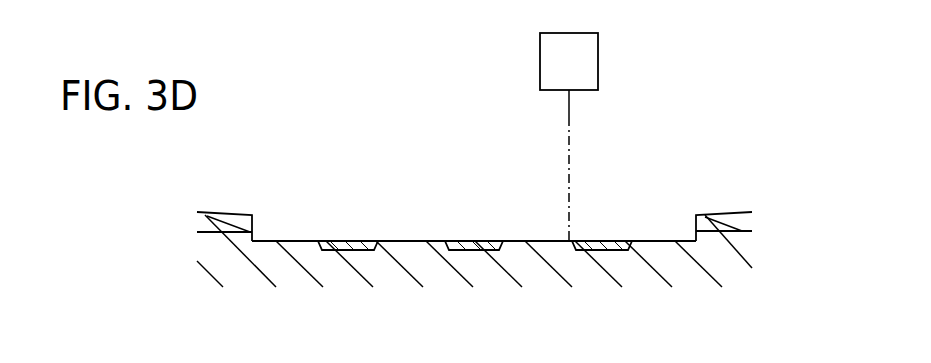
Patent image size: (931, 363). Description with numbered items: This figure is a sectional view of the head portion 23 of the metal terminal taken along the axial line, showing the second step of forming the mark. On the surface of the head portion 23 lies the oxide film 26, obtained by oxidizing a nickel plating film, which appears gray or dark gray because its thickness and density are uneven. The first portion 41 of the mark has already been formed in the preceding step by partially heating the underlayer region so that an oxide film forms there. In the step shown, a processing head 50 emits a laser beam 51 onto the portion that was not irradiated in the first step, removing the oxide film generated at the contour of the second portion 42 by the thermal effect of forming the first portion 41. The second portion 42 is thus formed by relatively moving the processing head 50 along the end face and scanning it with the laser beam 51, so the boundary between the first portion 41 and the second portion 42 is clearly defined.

The head portion 23 is at (647, 240).
The oxide film 26 is at (243, 217).
The first portion 41 is at (333, 240).
The second portion 42 is at (395, 240).
The processing head 50 is at (580, 62).
The laser beam 51 is at (570, 117).